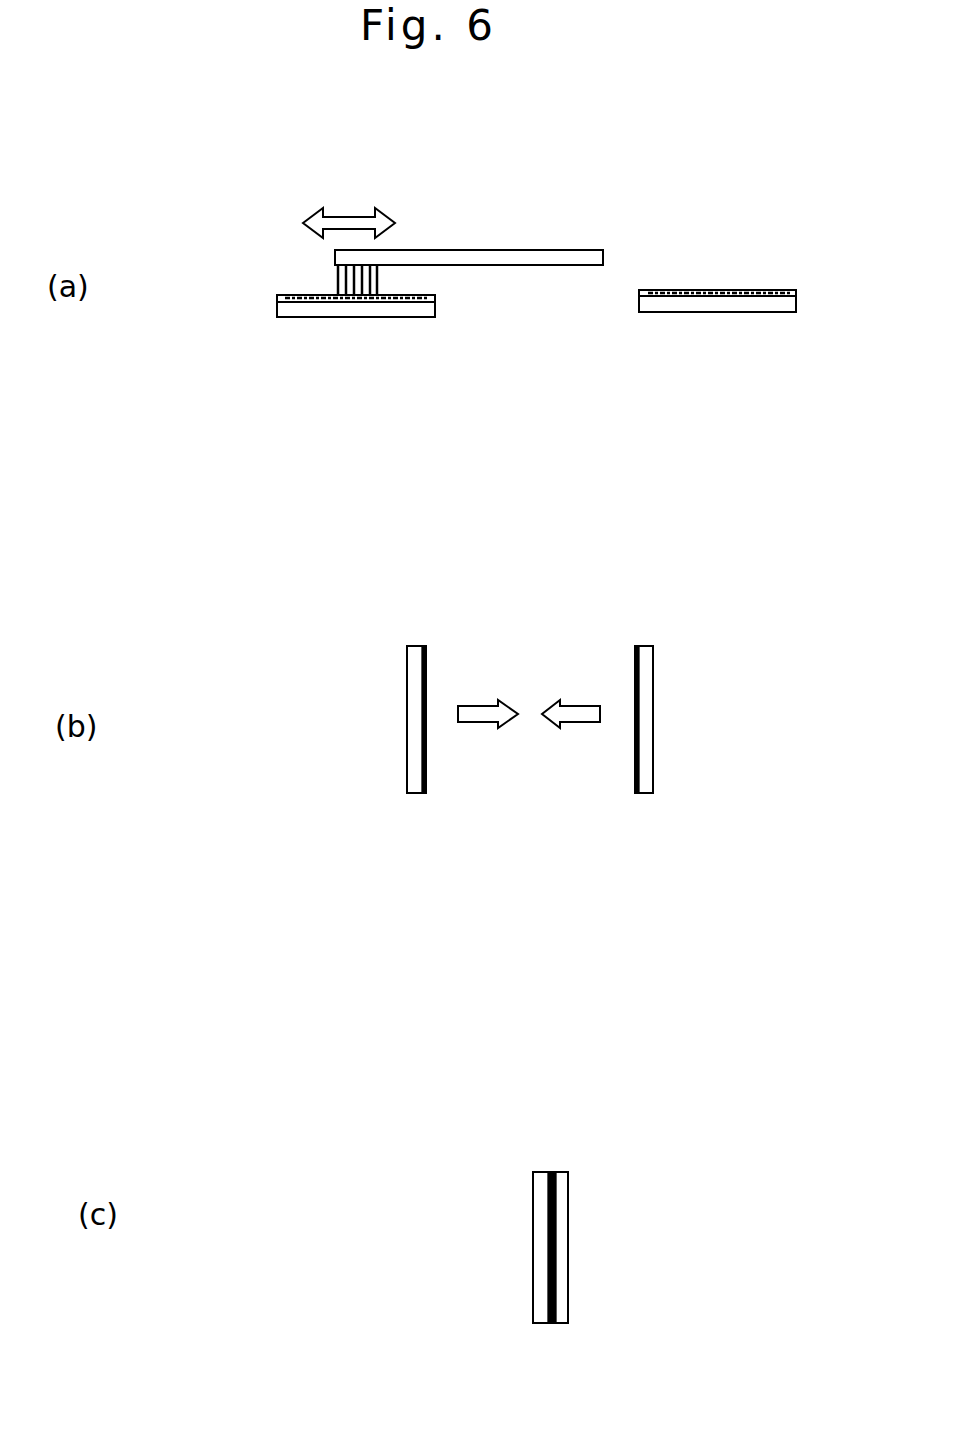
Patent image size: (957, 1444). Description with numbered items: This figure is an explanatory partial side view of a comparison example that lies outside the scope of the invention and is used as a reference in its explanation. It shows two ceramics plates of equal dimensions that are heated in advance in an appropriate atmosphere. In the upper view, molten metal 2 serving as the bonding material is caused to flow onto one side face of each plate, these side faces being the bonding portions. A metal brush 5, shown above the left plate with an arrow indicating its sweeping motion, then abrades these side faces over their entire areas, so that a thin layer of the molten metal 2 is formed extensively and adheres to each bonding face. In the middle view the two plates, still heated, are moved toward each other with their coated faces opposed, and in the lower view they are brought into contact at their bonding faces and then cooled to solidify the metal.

The molten metal 2 is at (298, 295).
The metal brush 5 is at (507, 248).